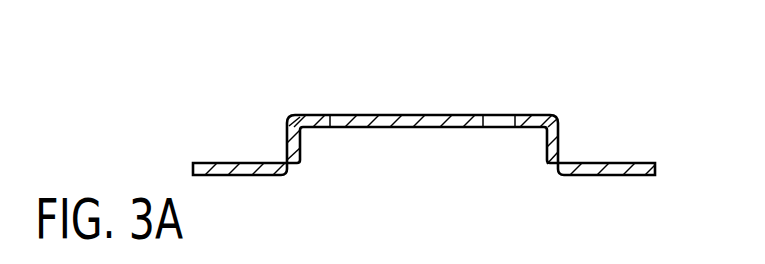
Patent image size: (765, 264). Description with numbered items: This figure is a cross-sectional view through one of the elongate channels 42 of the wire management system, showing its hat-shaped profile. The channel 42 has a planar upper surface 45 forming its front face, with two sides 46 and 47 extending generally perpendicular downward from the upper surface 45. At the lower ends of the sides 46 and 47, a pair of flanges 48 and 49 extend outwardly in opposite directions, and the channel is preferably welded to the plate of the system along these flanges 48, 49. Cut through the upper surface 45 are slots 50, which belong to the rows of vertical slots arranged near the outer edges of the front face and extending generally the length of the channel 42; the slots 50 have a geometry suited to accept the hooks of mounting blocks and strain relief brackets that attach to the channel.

The elongate channel 42 is at (253, 97).
The planar upper surface 45 is at (527, 115).
The side 46 is at (303, 140).
The side 47 is at (547, 142).
The outwardly extending flange 48 is at (243, 176).
The outwardly extending flange 49 is at (607, 176).
The slot 50 is at (363, 115).